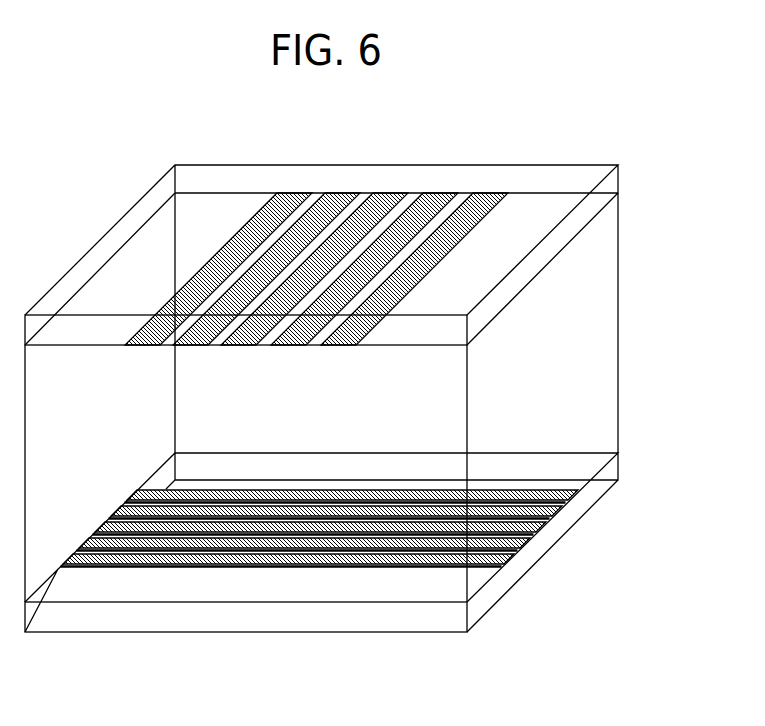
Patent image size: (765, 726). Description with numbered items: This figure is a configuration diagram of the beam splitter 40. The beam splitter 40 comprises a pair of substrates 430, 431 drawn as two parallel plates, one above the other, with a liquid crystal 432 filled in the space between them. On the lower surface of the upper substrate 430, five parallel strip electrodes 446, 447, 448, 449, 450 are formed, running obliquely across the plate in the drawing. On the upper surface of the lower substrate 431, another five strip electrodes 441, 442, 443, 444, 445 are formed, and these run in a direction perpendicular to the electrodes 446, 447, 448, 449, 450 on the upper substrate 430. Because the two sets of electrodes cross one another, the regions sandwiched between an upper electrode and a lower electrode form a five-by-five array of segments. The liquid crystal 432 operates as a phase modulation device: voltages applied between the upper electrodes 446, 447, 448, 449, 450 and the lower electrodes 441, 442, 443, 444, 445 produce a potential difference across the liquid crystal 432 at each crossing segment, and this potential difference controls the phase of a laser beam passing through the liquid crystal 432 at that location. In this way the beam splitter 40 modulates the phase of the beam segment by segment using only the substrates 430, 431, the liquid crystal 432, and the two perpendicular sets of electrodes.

The beam splitter 40 is at (124, 174).
The substrate 430 is at (238, 163).
The substrate 431 is at (383, 633).
The liquid crystal 432 is at (619, 320).
The electrode 441 is at (515, 560).
The electrode 442 is at (532, 542).
The electrode 443 is at (548, 523).
The electrode 444 is at (563, 506).
The electrode 445 is at (580, 490).
The electrode 446 is at (292, 197).
The electrode 447 is at (338, 197).
The electrode 448 is at (388, 197).
The electrode 449 is at (438, 197).
The electrode 450 is at (490, 197).